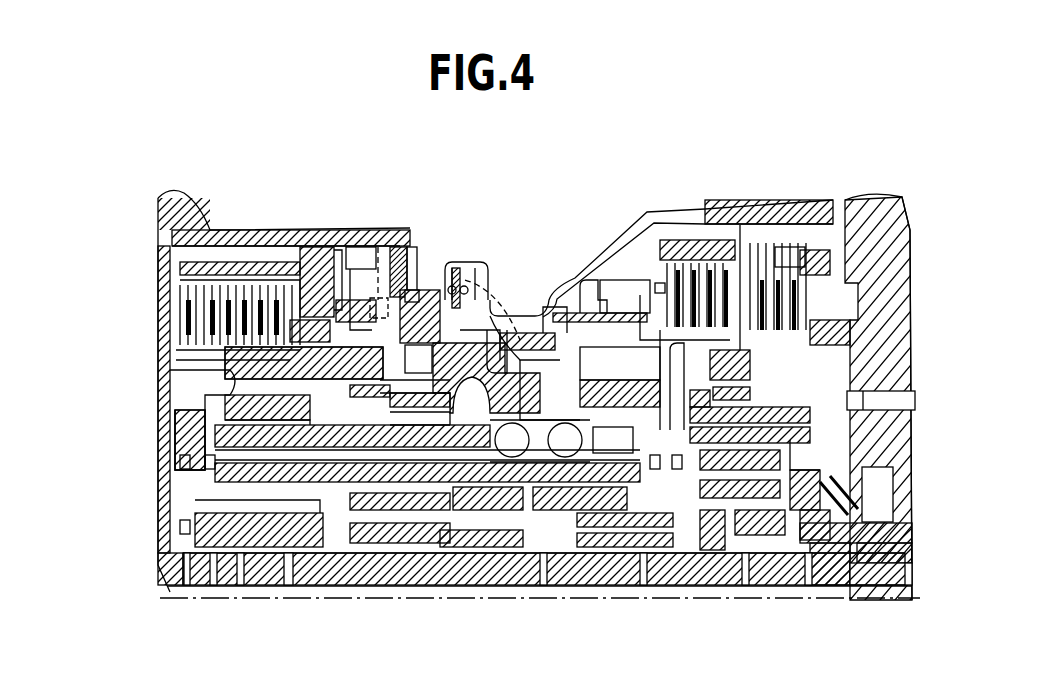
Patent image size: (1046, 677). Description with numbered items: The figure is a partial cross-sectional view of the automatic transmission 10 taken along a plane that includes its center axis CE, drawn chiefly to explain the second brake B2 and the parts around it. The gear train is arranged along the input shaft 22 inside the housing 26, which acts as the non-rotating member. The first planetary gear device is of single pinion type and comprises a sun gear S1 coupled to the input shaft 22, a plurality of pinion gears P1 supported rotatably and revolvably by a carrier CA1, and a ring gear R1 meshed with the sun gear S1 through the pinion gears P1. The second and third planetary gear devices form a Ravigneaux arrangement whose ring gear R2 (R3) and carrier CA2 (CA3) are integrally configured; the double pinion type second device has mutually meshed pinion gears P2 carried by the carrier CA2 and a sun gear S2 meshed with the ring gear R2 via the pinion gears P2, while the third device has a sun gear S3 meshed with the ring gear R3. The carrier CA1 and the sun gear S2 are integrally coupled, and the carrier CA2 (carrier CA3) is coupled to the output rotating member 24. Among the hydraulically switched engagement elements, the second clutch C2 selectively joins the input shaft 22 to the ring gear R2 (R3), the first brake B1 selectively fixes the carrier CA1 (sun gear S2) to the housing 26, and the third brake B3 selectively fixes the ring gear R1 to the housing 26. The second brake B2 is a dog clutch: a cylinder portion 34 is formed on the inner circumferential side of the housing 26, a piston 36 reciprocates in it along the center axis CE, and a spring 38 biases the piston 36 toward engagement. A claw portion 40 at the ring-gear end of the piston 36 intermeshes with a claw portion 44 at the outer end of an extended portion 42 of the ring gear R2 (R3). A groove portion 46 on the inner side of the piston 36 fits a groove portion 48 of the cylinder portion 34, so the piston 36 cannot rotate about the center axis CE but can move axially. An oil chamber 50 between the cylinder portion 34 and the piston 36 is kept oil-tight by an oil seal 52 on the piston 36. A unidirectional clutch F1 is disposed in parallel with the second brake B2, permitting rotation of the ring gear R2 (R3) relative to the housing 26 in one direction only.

The automatic transmission 10 is at (232, 148).
The input shaft 22 is at (562, 575).
The output rotating member 24 is at (598, 350).
The housing 26 is at (655, 212).
The cylinder portion 34 is at (437, 292).
The piston 36 is at (505, 300).
The spring 38 is at (490, 300).
The claw portion 40 is at (378, 247).
The extended portion 42 is at (346, 300).
The claw portion 44 is at (356, 300).
The groove portion 46 is at (512, 320).
The groove portion 48 is at (525, 325).
The oil chamber 50 is at (412, 250).
The oil seal 52 is at (396, 247).
The first brake B1 is at (830, 275).
The second brake B2 is at (450, 262).
The third brake B3 is at (640, 292).
The second clutch C2 is at (205, 262).
The unidirectional clutch F1 is at (308, 247).
The ring gear R1 is at (743, 310).
The ring gear R2 is at (200, 376).
The ring gear R3 is at (190, 440).
The sun gear S1 is at (735, 490).
The sun gear S2 is at (390, 545).
The sun gear S3 is at (210, 505).
The pinion gears P1 is at (748, 490).
The pinion gears P2 is at (470, 490).
The carrier CA1 is at (795, 520).
The carrier CA2 is at (270, 480).
The carrier CA3 is at (304, 363).
The center axis CE is at (160, 598).